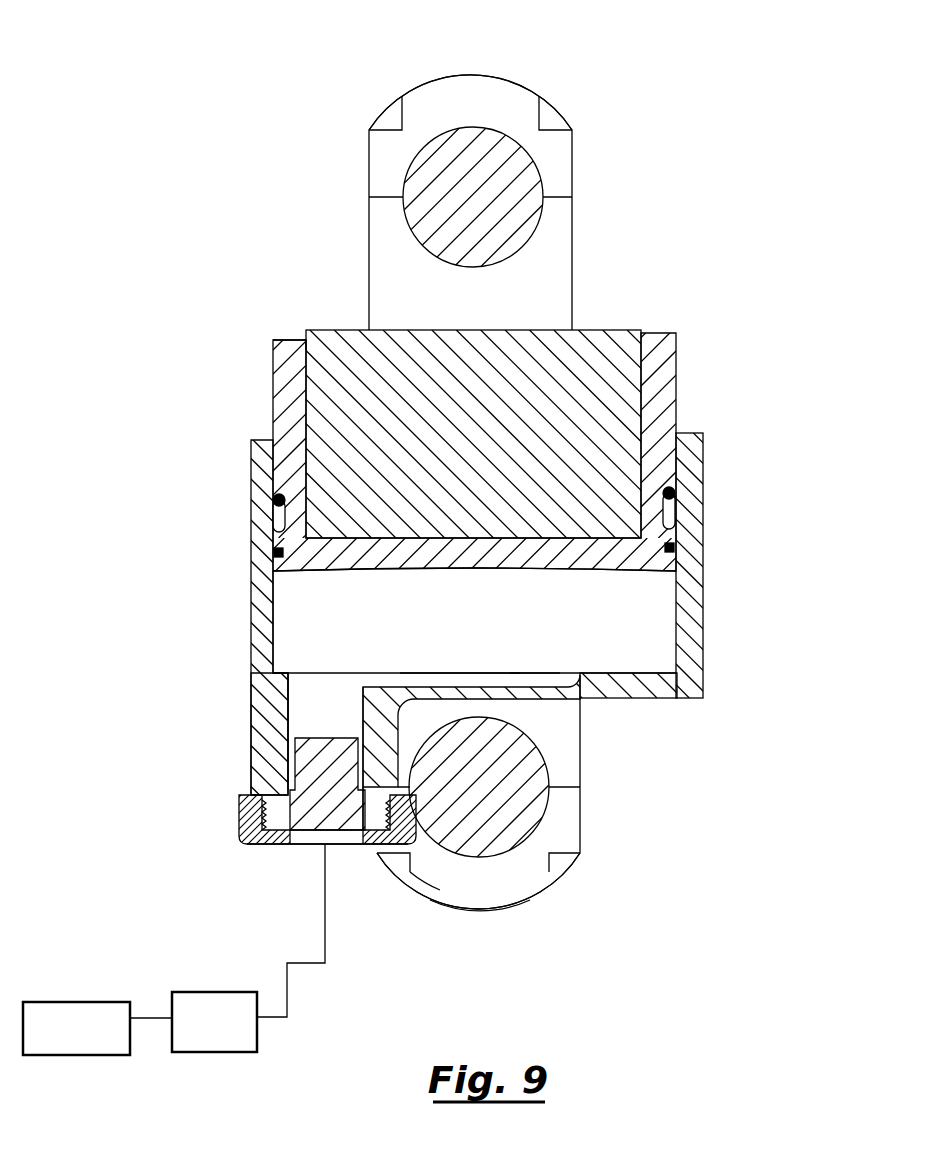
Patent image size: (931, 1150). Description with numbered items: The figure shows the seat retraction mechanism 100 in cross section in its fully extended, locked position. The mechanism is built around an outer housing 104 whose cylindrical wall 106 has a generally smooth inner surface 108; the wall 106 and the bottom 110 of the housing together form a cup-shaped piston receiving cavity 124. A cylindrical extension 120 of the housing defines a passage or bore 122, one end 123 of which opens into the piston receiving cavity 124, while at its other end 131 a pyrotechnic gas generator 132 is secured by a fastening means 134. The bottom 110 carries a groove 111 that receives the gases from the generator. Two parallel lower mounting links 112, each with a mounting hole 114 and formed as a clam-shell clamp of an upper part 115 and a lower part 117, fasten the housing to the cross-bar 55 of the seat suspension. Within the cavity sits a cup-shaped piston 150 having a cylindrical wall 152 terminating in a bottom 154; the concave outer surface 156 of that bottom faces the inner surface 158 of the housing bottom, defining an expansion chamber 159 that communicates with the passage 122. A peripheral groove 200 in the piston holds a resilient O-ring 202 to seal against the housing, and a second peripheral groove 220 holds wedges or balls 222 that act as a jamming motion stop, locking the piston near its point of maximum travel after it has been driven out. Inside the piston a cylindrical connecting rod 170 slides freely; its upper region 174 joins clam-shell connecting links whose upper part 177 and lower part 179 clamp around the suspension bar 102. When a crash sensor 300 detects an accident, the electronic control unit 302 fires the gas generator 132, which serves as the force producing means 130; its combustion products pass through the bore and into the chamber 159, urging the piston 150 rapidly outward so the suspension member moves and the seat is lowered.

The seat retraction mechanism 100 is at (193, 198).
The upper part 177 is at (473, 90).
The lower part 179 is at (386, 277).
The bar 102 is at (458, 212).
The connecting rod 170 is at (596, 348).
The piston shoulder 174 is at (322, 352).
The piston 150 is at (474, 446).
The cylindrical wall 152 is at (658, 420).
The bottom 154 is at (543, 560).
The wedges or balls 222 is at (280, 504).
The peripheral groove 220 is at (668, 517).
The O-ring 202 is at (276, 554).
The peripheral groove 200 is at (672, 556).
The outer housing 104 is at (465, 614).
The cylindrical wall 106 is at (699, 508).
The piston receiving cavity 124 is at (286, 634).
The cylindrical extension 120 is at (265, 750).
The inner surface 108 is at (676, 621).
The outer surface 156 is at (358, 572).
The inner surface 158 is at (458, 673).
The groove 111 is at (527, 678).
The expansion chamber 159 is at (651, 642).
The bottom 110 is at (520, 810).
The lower part 117 is at (537, 882).
The lower mounting link 112 is at (519, 892).
The force producing means 130 is at (438, 878).
The bar 55 is at (490, 811).
The upper part 115 is at (553, 740).
The mounting hole 114 is at (540, 808).
The another end 131 is at (241, 834).
The pyrotechnic gas generator 132 is at (321, 832).
The fastening means 134 is at (255, 846).
The passage or bore 122 is at (291, 740).
The one end 123 is at (297, 690).
The crash sensor 300 is at (97, 1028).
The electronic control unit 302 is at (214, 1022).